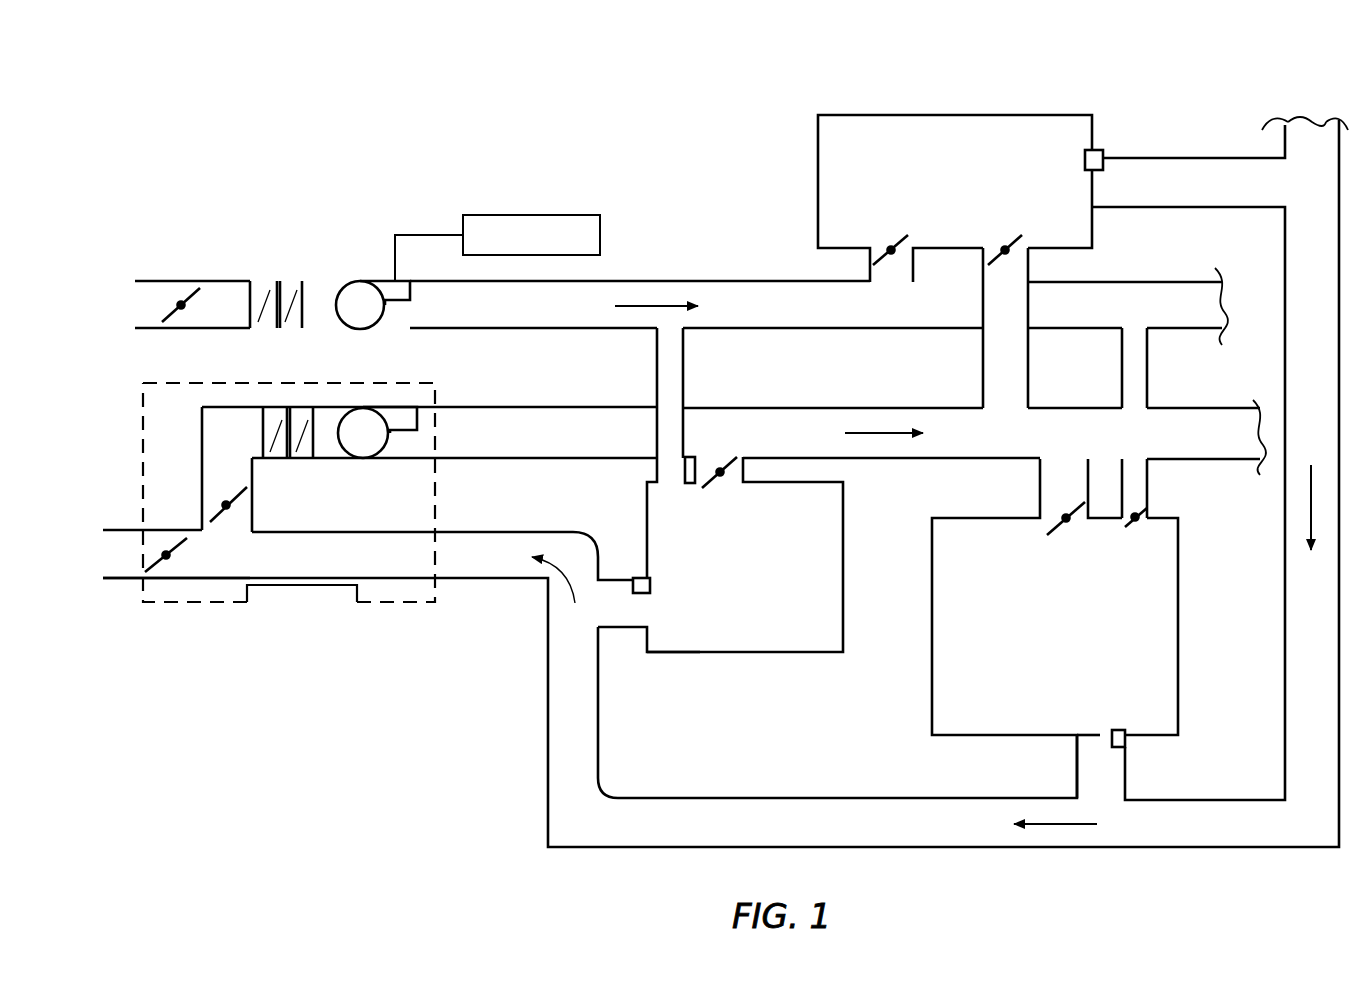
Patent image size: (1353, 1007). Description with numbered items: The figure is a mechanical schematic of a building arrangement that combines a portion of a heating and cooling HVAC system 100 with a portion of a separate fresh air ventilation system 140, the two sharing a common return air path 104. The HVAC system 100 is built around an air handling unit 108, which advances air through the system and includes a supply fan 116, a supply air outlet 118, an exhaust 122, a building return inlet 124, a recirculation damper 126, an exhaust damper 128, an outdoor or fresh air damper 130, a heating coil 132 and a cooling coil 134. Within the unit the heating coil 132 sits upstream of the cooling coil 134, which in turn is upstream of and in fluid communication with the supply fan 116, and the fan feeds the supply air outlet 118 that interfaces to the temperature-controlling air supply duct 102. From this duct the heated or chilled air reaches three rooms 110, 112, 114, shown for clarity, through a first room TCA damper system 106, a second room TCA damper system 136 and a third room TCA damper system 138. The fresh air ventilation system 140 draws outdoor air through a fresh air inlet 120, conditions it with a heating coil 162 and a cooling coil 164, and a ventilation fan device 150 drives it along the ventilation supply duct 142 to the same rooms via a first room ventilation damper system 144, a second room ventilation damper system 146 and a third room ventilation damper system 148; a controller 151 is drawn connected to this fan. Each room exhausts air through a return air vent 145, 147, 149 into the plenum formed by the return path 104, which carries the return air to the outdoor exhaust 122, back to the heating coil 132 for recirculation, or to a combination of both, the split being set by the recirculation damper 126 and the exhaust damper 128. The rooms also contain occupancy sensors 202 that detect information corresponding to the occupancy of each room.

The HVAC system 100 is at (364, 700).
The TCA supply duct 102 is at (603, 430).
The return air path 104 is at (570, 725).
The first room TCA damper system 106 is at (722, 470).
The air handling unit 108 is at (436, 405).
The first room 110 is at (720, 554).
The second room 112 is at (955, 198).
The third room 114 is at (1055, 628).
The supply fan 116 is at (384, 406).
The supply air outlet 118 is at (447, 430).
The fresh air inlet 120 is at (143, 280).
The exhaust 122 is at (143, 530).
The building return inlet 124 is at (437, 525).
The recirculation damper 126 is at (246, 507).
The exhaust damper 128 is at (167, 560).
The outdoor or fresh air damper 130 is at (181, 303).
The heating coil 132 is at (272, 406).
The cooling coil 134 is at (302, 406).
The second room TCA damper system 136 is at (1050, 262).
The third room TCA damper system 138 is at (1052, 518).
The fresh air ventilation system 140 is at (726, 188).
The ventilation supply duct 142 is at (815, 310).
The first room ventilation damper system 144 is at (678, 475).
The return air vent 145 is at (672, 612).
The second room ventilation damper system 146 is at (888, 252).
The return air vent 147 is at (1085, 188).
The third room ventilation damper system 148 is at (1148, 516).
The return air vent 149 is at (1086, 710).
The ventilation fan device 150 is at (358, 280).
The controller 151 is at (490, 214).
The heating coil 162 is at (268, 280).
The cooling coil 164 is at (290, 280).
The sensors 202 is at (1105, 150).